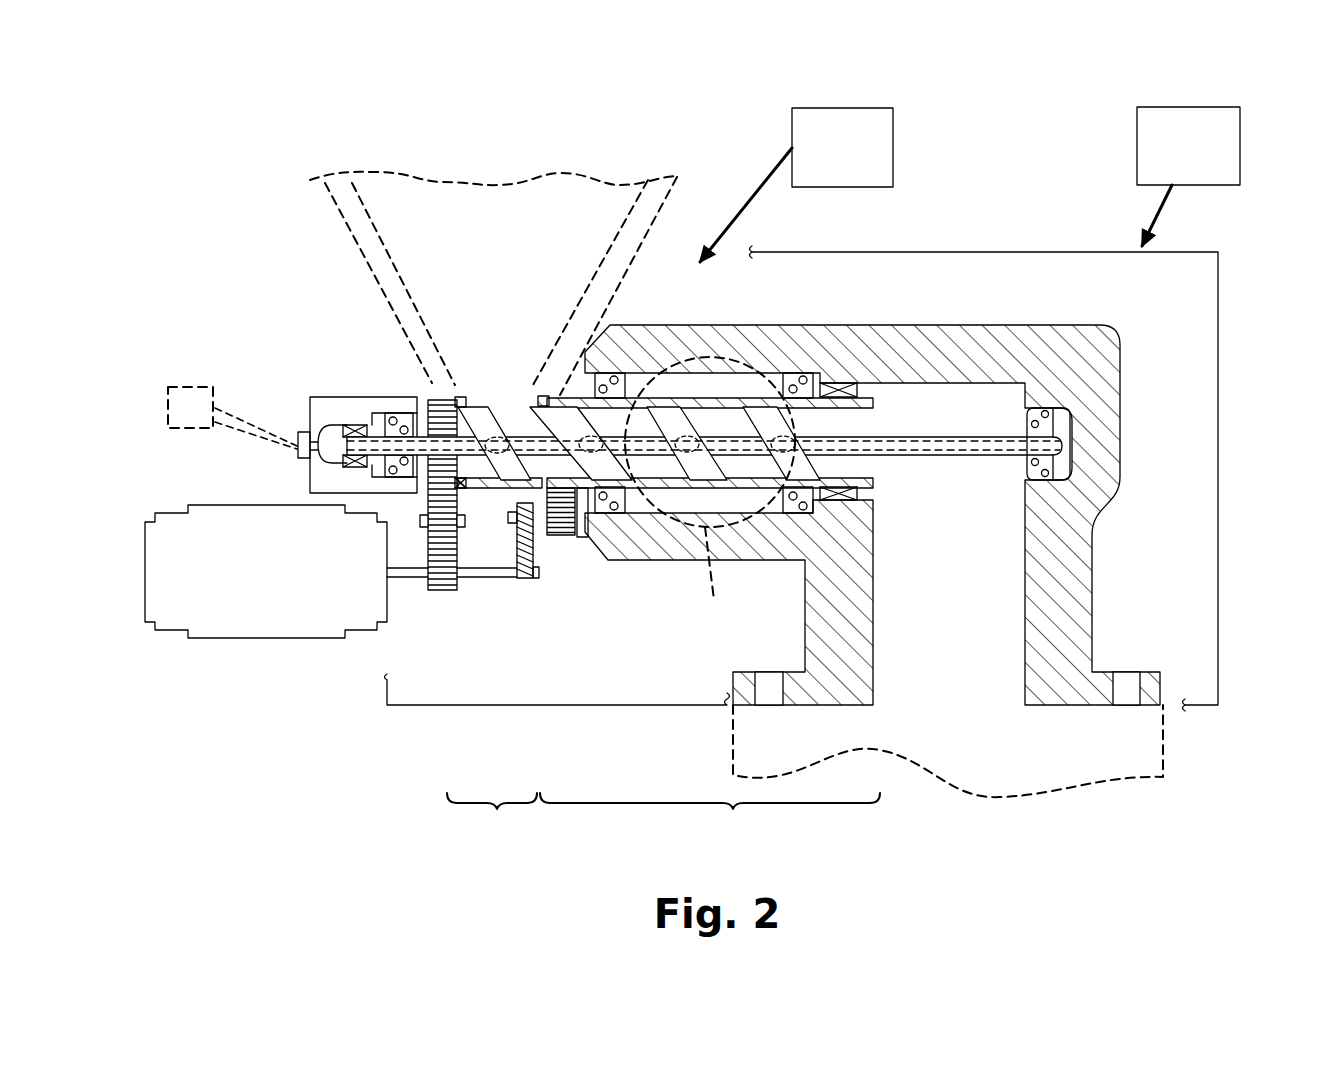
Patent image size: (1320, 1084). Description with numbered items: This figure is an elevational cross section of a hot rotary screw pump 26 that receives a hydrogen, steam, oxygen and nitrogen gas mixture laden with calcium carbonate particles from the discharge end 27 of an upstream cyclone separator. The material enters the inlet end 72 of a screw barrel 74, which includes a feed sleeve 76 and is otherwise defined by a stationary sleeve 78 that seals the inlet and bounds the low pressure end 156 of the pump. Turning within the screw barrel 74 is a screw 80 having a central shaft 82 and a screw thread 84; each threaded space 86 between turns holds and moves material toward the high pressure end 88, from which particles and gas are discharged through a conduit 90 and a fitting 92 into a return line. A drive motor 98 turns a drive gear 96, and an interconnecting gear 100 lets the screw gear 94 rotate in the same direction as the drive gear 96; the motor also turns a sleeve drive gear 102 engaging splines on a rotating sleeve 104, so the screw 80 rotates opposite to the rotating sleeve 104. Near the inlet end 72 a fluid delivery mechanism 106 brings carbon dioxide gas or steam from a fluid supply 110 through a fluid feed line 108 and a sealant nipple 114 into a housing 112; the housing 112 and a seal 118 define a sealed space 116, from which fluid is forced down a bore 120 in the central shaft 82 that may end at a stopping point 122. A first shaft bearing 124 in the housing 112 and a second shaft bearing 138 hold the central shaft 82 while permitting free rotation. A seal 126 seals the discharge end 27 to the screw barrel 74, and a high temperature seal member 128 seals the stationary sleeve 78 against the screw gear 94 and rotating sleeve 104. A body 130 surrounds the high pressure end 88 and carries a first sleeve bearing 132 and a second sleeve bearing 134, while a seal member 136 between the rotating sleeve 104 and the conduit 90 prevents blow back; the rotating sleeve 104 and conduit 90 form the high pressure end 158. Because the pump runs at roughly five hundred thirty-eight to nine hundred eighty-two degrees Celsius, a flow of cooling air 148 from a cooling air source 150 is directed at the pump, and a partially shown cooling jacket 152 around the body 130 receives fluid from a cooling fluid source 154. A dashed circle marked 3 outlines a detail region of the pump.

The section line of FIG. 3 is at (710, 492).
The screw pump 26 is at (980, 231).
The discharge end 27 is at (672, 203).
The inlet end 72 is at (432, 383).
The screw barrel 74 is at (567, 392).
The feed sleeve 76 is at (480, 388).
The stationary sleeve 78 is at (512, 548).
The screw 80 is at (903, 460).
The central shaft 82 is at (988, 458).
The screw thread 84 is at (935, 350).
The threaded space 86 is at (817, 548).
The high pressure end 88 is at (873, 490).
The conduit 90 is at (958, 628).
The fitting 92 is at (725, 745).
The screw gear 94 is at (430, 403).
The drive gear 96 is at (443, 592).
The drive motor 98 is at (275, 640).
The interconnecting gear 100 is at (455, 520).
The sleeve drive gear 102 is at (585, 560).
The rotating sleeve 104 is at (745, 393).
The fluid delivery mechanism 106 is at (308, 473).
The fluid feed line 108 is at (245, 417).
The fluid supply 110 is at (170, 378).
The housing 112 is at (323, 397).
The sealant nipple 114 is at (297, 450).
The sealed space 116 is at (298, 432).
The seal 118 is at (357, 427).
The bore 120 is at (958, 432).
The stopping point 122 is at (982, 403).
The first shaft bearing 124 is at (417, 475).
The seal 126 is at (540, 396).
The high temperature seal member 128 is at (545, 513).
The body 130 is at (1108, 390).
The first sleeve bearing 132 is at (622, 388).
The second sleeve bearing 134 is at (813, 378).
The seal member 136 is at (873, 400).
The second shaft bearing 138 is at (460, 397).
The flow of cooling air 148 is at (742, 224).
The cooling air source 150 is at (860, 108).
The cooling jacket 152 is at (1220, 388).
The cooling fluid source 154 is at (1137, 123).
The low pressure end 156 is at (492, 814).
The high pressure end 158 is at (710, 818).